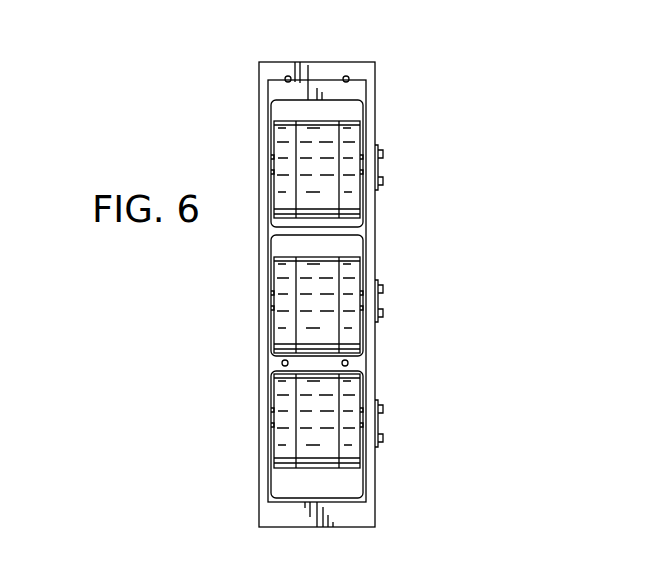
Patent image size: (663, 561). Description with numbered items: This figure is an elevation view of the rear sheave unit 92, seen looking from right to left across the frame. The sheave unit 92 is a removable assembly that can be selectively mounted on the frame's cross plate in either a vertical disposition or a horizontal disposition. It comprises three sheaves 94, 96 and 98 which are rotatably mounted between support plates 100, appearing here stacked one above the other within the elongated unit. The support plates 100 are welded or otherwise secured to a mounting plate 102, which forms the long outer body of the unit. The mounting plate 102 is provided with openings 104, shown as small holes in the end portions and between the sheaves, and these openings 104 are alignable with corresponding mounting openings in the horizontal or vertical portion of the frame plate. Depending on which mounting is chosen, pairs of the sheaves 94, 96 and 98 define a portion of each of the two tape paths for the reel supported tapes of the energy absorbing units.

The rear sheave unit 92 is at (406, 96).
The sheave 94 is at (355, 200).
The sheave 96 is at (349, 335).
The sheave 98 is at (353, 387).
The support plates 100 is at (268, 146).
The mounting plate 102 is at (329, 67).
The openings 104 is at (288, 76).